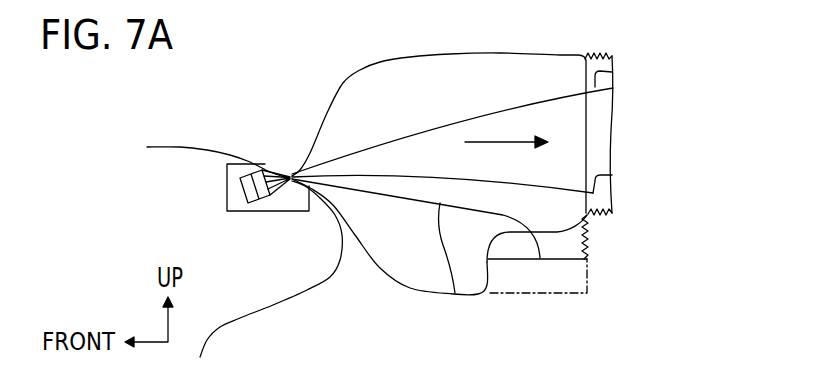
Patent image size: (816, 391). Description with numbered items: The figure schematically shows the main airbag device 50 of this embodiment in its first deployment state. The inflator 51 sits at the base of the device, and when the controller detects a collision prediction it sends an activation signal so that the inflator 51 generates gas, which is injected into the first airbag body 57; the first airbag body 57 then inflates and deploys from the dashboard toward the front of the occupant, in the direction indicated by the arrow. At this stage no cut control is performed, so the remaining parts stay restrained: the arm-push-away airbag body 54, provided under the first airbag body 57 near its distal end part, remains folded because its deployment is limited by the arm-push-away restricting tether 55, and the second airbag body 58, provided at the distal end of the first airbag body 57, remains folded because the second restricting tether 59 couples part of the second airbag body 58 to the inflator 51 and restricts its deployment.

The main airbag device 50 is at (263, 211).
The inflator 51 is at (245, 160).
The arm-push-away airbag body 54 is at (555, 260).
The arm-push-away restricting tether 55 is at (455, 293).
The first airbag body 57 is at (422, 57).
The second airbag body 58 is at (613, 119).
The second restricting tether 59 is at (613, 73).